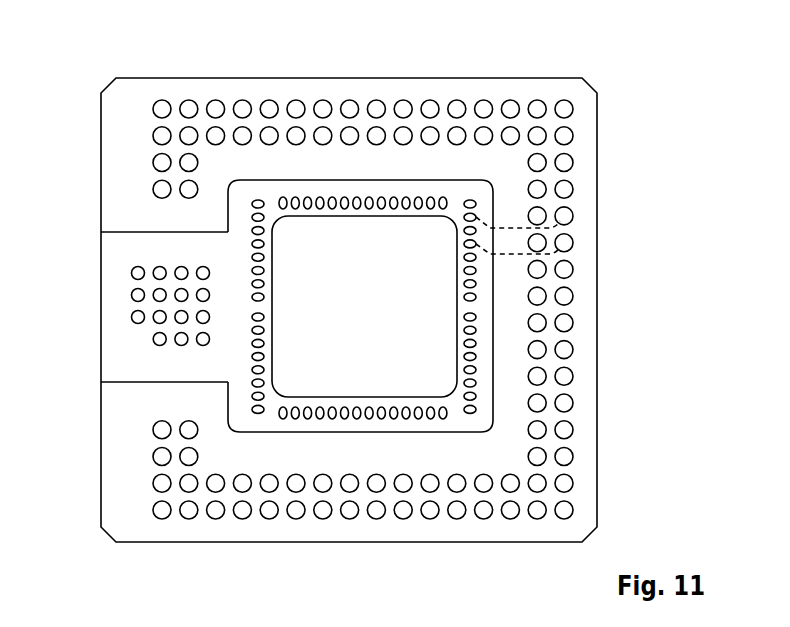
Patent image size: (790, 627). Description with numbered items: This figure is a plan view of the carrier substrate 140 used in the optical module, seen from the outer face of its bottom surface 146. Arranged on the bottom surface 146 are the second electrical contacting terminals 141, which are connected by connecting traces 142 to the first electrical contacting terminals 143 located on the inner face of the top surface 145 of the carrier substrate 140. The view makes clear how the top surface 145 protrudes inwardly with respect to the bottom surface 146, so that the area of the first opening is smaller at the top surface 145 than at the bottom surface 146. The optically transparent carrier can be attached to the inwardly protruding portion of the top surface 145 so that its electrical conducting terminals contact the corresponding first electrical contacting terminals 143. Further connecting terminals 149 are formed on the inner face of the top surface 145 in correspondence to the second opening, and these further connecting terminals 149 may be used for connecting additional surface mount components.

The carrier substrate 140 is at (622, 98).
The second electrical contacting terminals 141 is at (162, 105).
The connecting traces 142 is at (509, 228).
The first electrical contacting terminals 143 is at (252, 260).
The top surface 145 is at (121, 360).
The bottom surface 146 is at (121, 172).
The further connecting terminals 149 is at (131, 316).